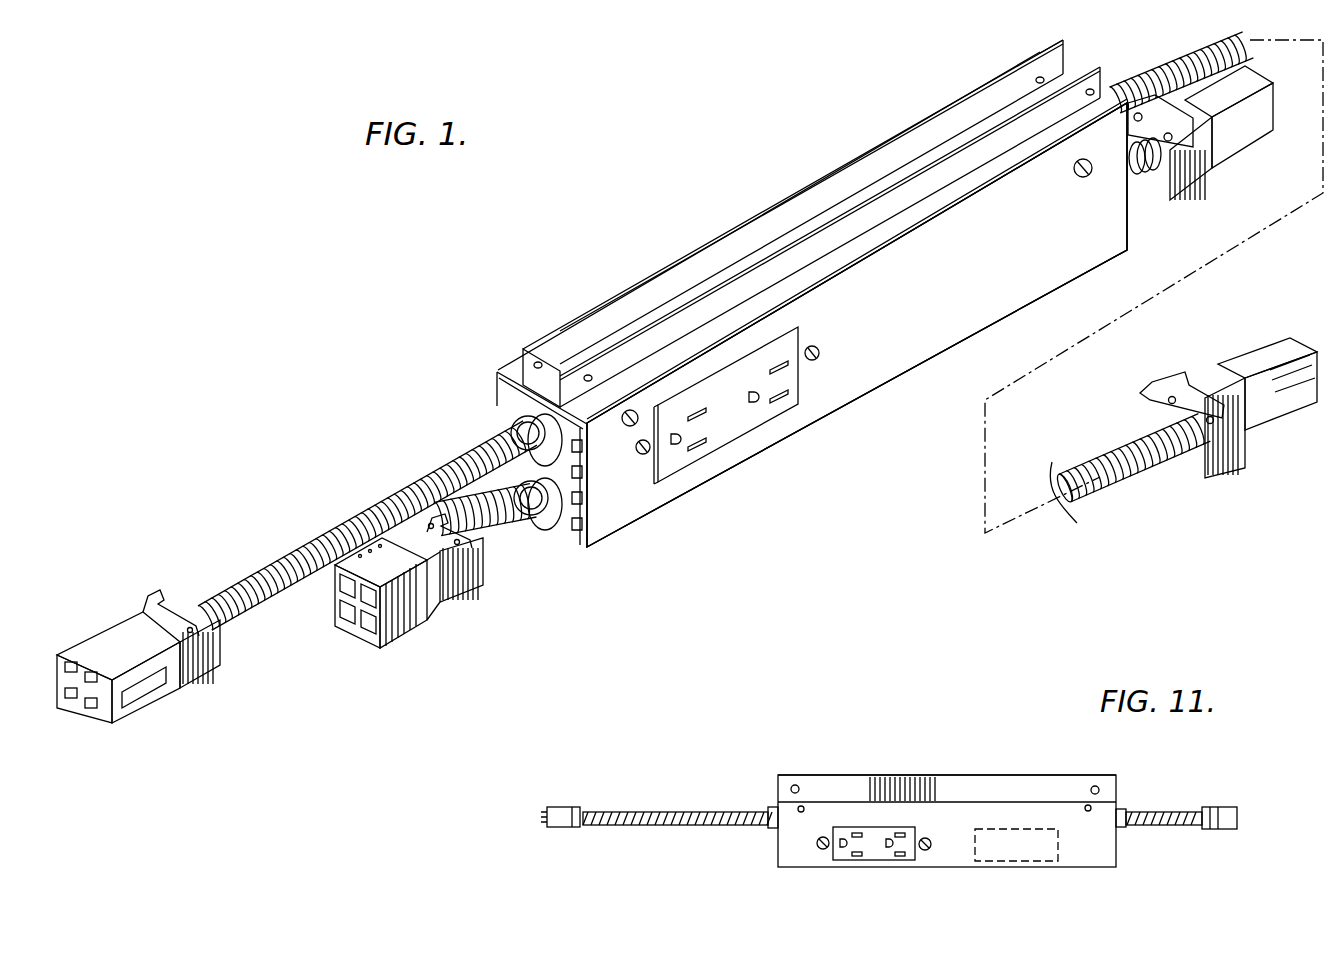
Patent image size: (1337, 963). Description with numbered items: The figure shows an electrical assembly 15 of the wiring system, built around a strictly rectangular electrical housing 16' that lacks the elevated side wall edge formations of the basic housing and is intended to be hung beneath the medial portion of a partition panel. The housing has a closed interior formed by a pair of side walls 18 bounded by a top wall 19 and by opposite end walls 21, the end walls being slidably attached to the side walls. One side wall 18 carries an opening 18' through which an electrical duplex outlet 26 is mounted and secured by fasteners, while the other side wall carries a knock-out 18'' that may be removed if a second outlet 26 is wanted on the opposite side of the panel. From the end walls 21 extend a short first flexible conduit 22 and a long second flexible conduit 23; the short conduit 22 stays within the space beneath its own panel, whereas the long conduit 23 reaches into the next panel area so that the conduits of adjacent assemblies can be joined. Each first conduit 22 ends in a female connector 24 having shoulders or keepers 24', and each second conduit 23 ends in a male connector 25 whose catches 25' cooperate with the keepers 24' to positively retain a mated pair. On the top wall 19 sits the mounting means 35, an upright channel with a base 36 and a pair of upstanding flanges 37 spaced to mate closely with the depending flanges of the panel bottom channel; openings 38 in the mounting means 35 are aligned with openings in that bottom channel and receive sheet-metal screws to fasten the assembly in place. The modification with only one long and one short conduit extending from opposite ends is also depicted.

In FIG. 1, the electrical assembly 15 is at (657, 201).
In FIG. 1, the electrical housing 16' is at (857, 325).
In FIG. 11, the electrical housing 16' is at (947, 791).
In FIG. 1, the side wall 18 is at (857, 325).
In FIG. 11, the opening 18' is at (874, 869).
In FIG. 11, the knock-out 18'' is at (1016, 870).
In FIG. 1, the top wall 19 is at (972, 188).
In FIG. 1, the end wall 21 is at (557, 513).
In FIG. 1, the first flexible conduit 22 is at (507, 512).
In FIG. 11, the first flexible conduit 22 is at (1157, 807).
In FIG. 1, the second flexible conduit 23 is at (333, 530).
In FIG. 11, the second flexible conduit 23 is at (702, 808).
In FIG. 1, the female connector 24 is at (814, 357).
In FIG. 11, the female connector 24 is at (1235, 798).
In FIG. 1, the shoulders or keepers 24' is at (379, 617).
In FIG. 1, the male connector 25 is at (687, 530).
In FIG. 11, the male connector 25 is at (581, 791).
In FIG. 1, the catches 25' is at (124, 701).
In FIG. 1, the electrical duplex outlet 26 is at (730, 427).
In FIG. 1, the mounting means 35 is at (829, 168).
In FIG. 1, the base 36 is at (547, 382).
In FIG. 1, the upstanding flange 37 is at (1063, 100).
In FIG. 11, the upstanding flange 37 is at (1010, 788).
In FIG. 1, the opening 38 is at (1101, 92).
In FIG. 11, the opening 38 is at (1097, 787).